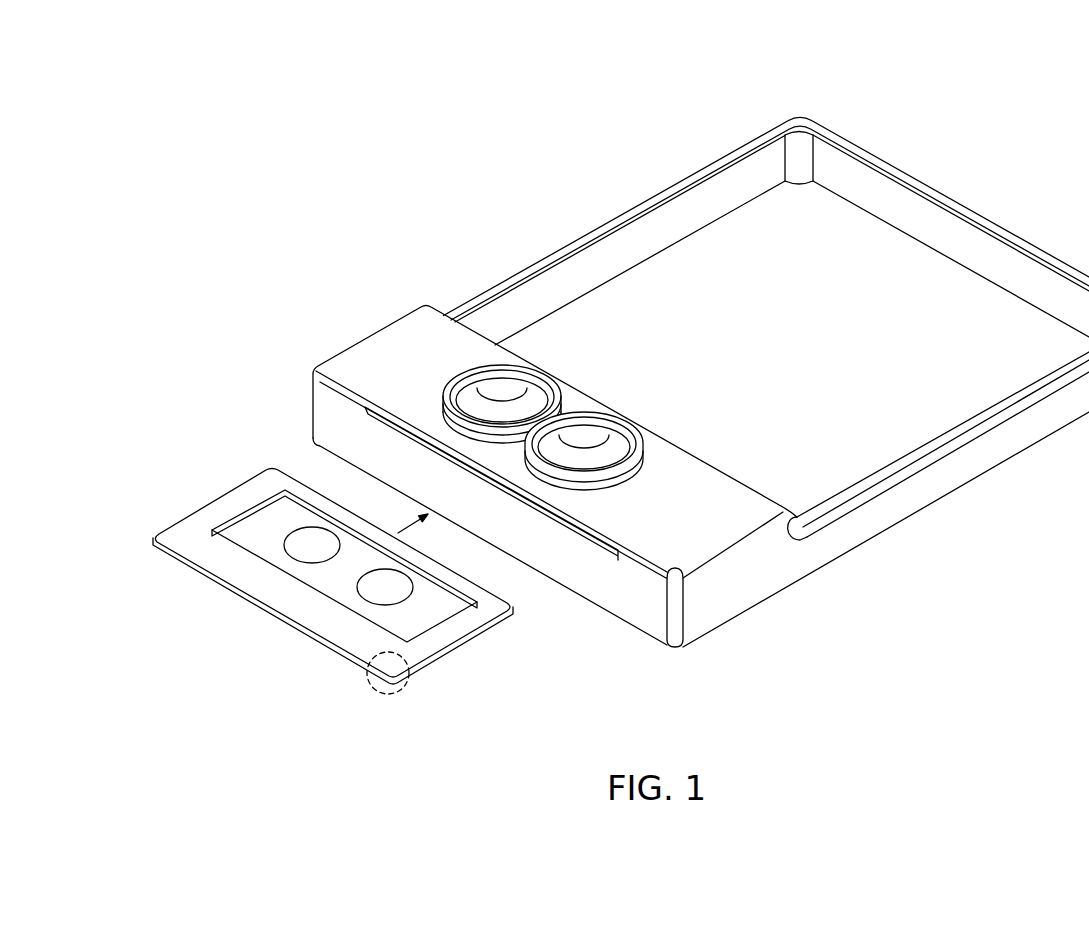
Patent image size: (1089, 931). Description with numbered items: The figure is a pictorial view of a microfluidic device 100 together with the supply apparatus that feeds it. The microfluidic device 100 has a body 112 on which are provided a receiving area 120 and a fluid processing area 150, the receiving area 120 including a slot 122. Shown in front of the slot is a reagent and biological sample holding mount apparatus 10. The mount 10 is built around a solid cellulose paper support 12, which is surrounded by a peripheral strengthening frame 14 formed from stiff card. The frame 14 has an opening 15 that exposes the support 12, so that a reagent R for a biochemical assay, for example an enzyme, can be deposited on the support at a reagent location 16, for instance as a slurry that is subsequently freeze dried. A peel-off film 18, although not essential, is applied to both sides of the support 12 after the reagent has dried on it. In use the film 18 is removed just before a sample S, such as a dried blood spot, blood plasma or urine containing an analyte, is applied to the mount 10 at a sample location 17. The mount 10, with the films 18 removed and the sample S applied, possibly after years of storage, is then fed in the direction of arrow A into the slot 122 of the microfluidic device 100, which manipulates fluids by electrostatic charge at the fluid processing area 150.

The reagent and biological sample holding mount apparatus 10 is at (344, 596).
The solid cellulose paper support 12 is at (340, 586).
The peripheral strengthening frame 14 is at (272, 594).
The opening 15 is at (257, 520).
The reagent location 16 is at (283, 545).
The sample location 17 is at (413, 594).
The peel-off film 18 is at (410, 652).
The microfluidic device 100 is at (701, 356).
The body 112 is at (622, 214).
The receiving area 120 is at (555, 465).
The slot 122 is at (613, 557).
The fluid processing area 150 is at (768, 348).